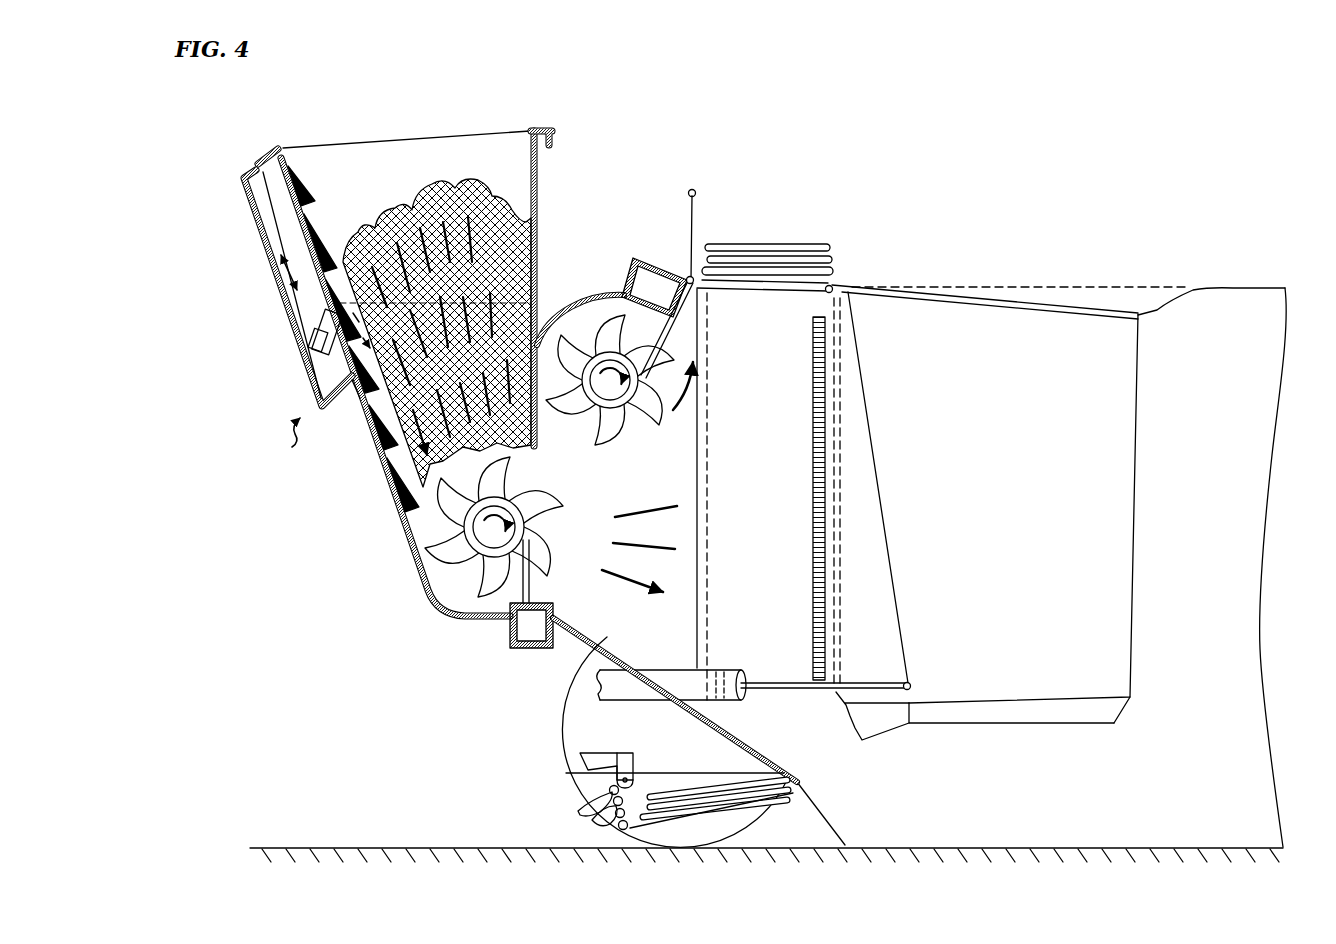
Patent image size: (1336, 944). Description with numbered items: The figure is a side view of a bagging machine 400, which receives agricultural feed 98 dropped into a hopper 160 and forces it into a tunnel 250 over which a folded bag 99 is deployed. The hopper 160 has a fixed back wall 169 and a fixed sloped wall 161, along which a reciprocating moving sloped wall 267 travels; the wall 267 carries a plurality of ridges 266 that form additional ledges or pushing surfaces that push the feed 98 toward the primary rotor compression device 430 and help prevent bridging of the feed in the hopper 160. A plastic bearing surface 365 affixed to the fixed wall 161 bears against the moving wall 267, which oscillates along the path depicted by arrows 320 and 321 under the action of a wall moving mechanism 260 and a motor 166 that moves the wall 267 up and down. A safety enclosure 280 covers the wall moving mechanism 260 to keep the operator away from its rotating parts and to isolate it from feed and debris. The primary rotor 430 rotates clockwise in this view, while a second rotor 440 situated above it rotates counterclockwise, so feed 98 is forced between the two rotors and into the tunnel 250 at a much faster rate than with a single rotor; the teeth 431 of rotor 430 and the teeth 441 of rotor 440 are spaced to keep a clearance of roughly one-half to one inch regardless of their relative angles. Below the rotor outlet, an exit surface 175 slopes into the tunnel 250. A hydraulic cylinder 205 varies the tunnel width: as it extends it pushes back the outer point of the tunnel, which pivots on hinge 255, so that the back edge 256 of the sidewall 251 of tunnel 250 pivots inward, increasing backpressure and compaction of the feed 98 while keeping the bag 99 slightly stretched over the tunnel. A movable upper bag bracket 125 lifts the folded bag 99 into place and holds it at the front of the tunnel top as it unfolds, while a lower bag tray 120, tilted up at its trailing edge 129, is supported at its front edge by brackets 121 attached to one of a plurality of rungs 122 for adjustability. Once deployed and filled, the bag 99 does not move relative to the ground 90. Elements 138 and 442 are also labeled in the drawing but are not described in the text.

The bagging machine 400 is at (946, 68).
The moving sloped wall 267 is at (285, 152).
The hopper top edge 138 is at (353, 147).
The feed 98 is at (411, 186).
The hopper 160 is at (491, 131).
The fixed back wall 169 is at (536, 128).
The safety enclosure 280 is at (238, 197).
The ridges 266 is at (332, 268).
The arrow 320 is at (271, 276).
The arrow 321 is at (288, 318).
The wall moving mechanism 260 is at (290, 441).
The motor 166 is at (353, 398).
The fixed sloped wall 161 is at (387, 453).
The plastic bearing surface 365 is at (405, 505).
The teeth of rotor 431 is at (420, 549).
The primary rotor compression device 430 is at (516, 505).
The movable upper bag bracket 125 is at (689, 206).
The bag 99 is at (788, 244).
The fan pivot housing 442 is at (660, 338).
The second rotor 440 is at (617, 412).
The teeth of second rotor 441 is at (650, 432).
The hinge 255 is at (812, 430).
The tunnel 250 is at (1135, 523).
The back edge 256 is at (1131, 696).
The sidewall 251 is at (1040, 690).
The hydraulic cylinder 205 is at (640, 668).
The exit surface 175 is at (724, 729).
The brackets 121 is at (636, 766).
The rungs 122 is at (579, 811).
The trailing edge 129 is at (795, 797).
The ground 90 is at (327, 847).
The lower bag tray 120 is at (647, 849).